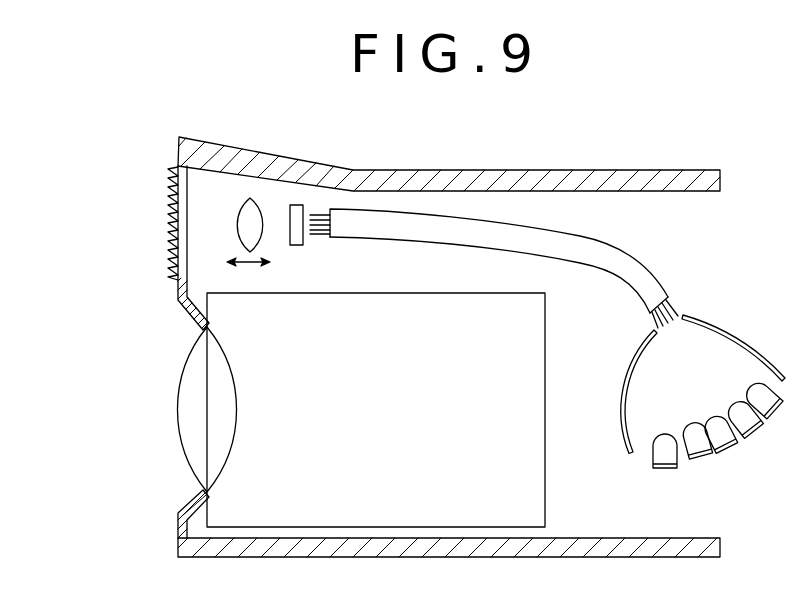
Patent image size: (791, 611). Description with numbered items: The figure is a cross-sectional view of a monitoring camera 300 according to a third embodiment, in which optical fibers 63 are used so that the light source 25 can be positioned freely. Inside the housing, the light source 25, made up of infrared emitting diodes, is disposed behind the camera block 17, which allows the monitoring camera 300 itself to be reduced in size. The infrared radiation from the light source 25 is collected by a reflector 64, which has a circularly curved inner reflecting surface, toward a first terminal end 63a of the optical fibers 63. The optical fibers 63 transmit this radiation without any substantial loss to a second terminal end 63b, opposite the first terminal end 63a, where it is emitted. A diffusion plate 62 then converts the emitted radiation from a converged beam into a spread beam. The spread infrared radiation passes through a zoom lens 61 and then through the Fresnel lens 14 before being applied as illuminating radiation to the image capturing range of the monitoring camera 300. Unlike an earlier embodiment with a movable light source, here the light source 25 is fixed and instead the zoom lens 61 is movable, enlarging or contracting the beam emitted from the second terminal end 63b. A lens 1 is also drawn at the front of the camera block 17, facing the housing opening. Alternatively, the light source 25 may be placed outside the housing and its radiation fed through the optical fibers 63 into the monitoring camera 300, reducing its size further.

The monitoring camera 300 is at (566, 158).
The Fresnel lens 14 is at (178, 222).
The lens 1 is at (194, 401).
The camera block 17 is at (330, 297).
The zoom lens 61 is at (250, 196).
The diffusion plate 62 is at (296, 204).
The second terminal end 63b is at (320, 212).
The optical fibers 63 is at (641, 262).
The first terminal end 63a is at (680, 313).
The reflector 64 is at (740, 330).
The light source 25 is at (742, 445).